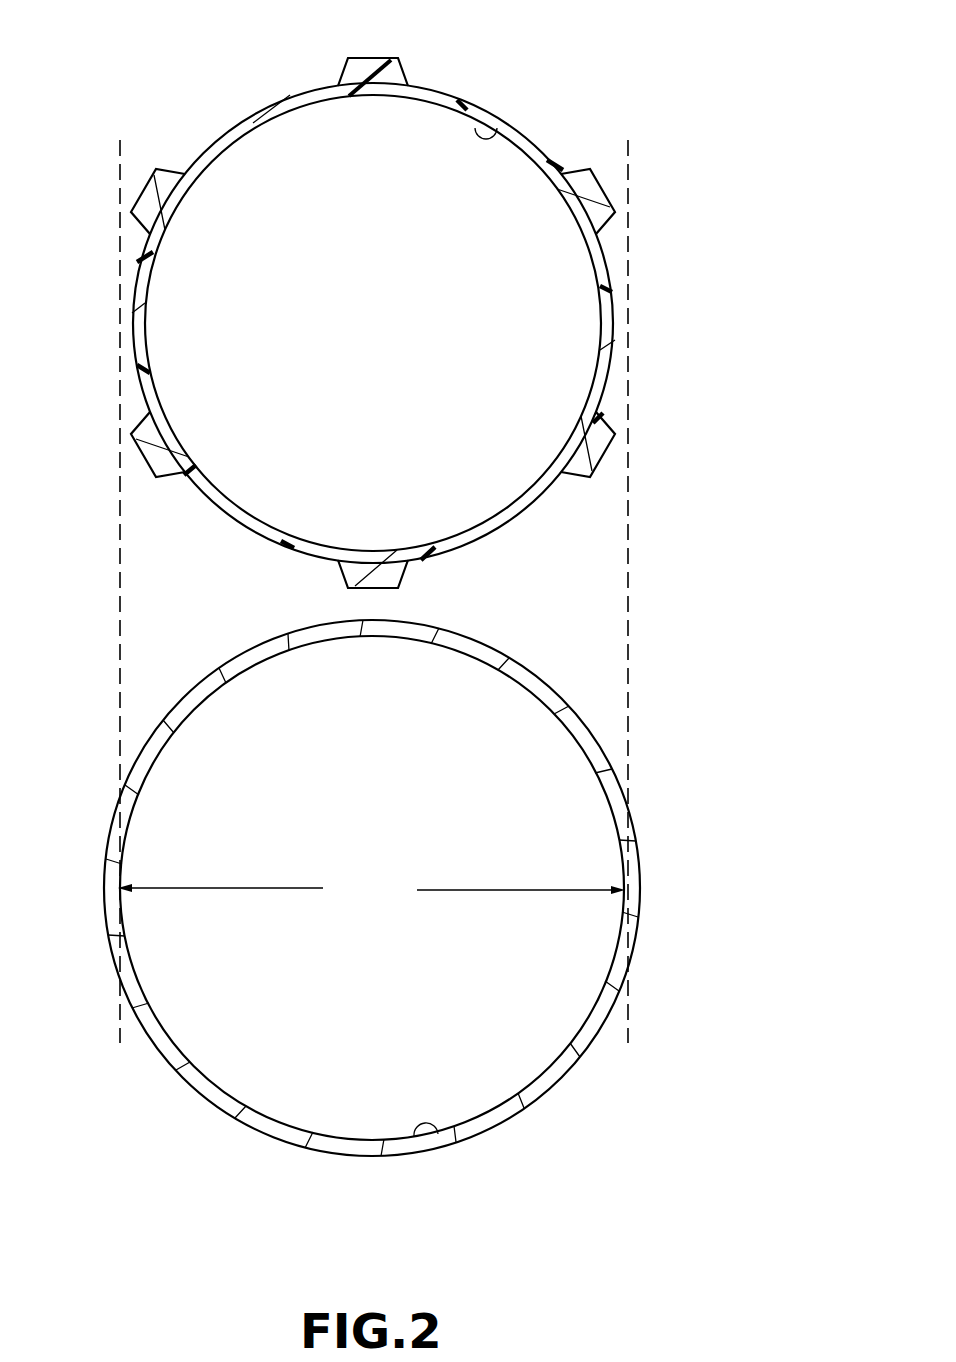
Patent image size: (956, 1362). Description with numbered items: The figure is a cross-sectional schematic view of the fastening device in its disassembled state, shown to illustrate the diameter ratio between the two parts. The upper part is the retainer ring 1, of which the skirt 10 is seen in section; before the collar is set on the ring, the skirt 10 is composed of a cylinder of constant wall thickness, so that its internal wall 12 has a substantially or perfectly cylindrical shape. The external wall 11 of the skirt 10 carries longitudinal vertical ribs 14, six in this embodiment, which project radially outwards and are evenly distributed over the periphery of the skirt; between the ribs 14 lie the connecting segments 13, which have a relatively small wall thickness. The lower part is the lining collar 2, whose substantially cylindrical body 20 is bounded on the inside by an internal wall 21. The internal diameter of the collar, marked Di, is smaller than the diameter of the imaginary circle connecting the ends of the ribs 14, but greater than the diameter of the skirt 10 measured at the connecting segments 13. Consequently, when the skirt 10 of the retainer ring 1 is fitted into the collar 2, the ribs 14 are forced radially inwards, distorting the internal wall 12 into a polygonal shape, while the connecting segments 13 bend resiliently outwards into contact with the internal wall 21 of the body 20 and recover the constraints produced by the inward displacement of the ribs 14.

The retainer ring 1 is at (327, 294).
The skirt 10 is at (143, 330).
The external wall 11 is at (448, 88).
The internal wall 12 is at (497, 128).
The connecting segments 13 is at (293, 97).
The ribs 14 is at (378, 63).
The lining collar 2 is at (372, 912).
The body 20 is at (545, 1097).
The internal wall 21 is at (440, 1133).